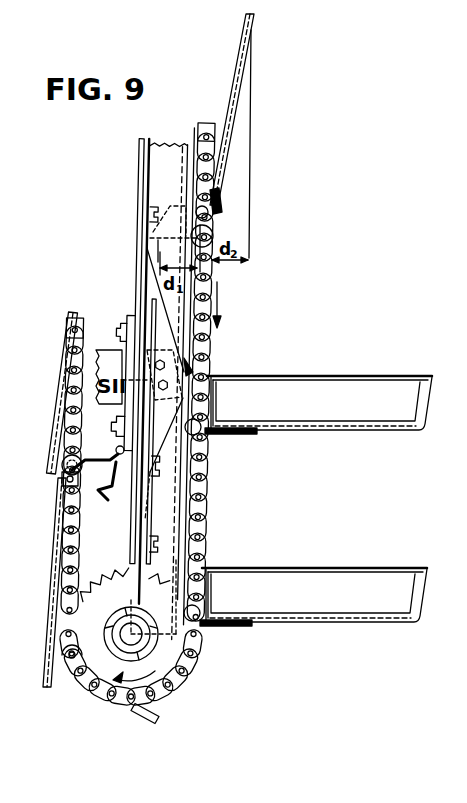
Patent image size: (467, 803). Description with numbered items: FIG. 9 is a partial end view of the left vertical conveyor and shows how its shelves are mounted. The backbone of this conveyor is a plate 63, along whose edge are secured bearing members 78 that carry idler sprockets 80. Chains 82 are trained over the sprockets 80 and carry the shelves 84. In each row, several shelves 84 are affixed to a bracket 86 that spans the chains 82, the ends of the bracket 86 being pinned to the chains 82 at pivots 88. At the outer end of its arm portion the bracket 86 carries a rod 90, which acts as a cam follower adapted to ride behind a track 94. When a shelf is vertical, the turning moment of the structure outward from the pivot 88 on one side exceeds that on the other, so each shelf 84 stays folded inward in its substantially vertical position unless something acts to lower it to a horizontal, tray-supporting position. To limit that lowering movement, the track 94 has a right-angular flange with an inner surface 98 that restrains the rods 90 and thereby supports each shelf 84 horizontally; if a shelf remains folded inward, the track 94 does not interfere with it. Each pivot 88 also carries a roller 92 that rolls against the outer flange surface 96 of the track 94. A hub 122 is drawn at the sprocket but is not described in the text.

The plate 63 is at (138, 193).
The bearing members 78 is at (150, 505).
The idler sprockets 80 is at (110, 568).
The chains 82 is at (205, 358).
The shelves 84 is at (62, 378).
The bracket 86 is at (116, 493).
The pivot 88 is at (66, 479).
The rod 90 is at (117, 447).
The roller 92 is at (65, 460).
The track 94 is at (158, 165).
The outer flange surface 96 is at (197, 133).
The inner surface 98 is at (187, 163).
The hub 122 is at (148, 657).